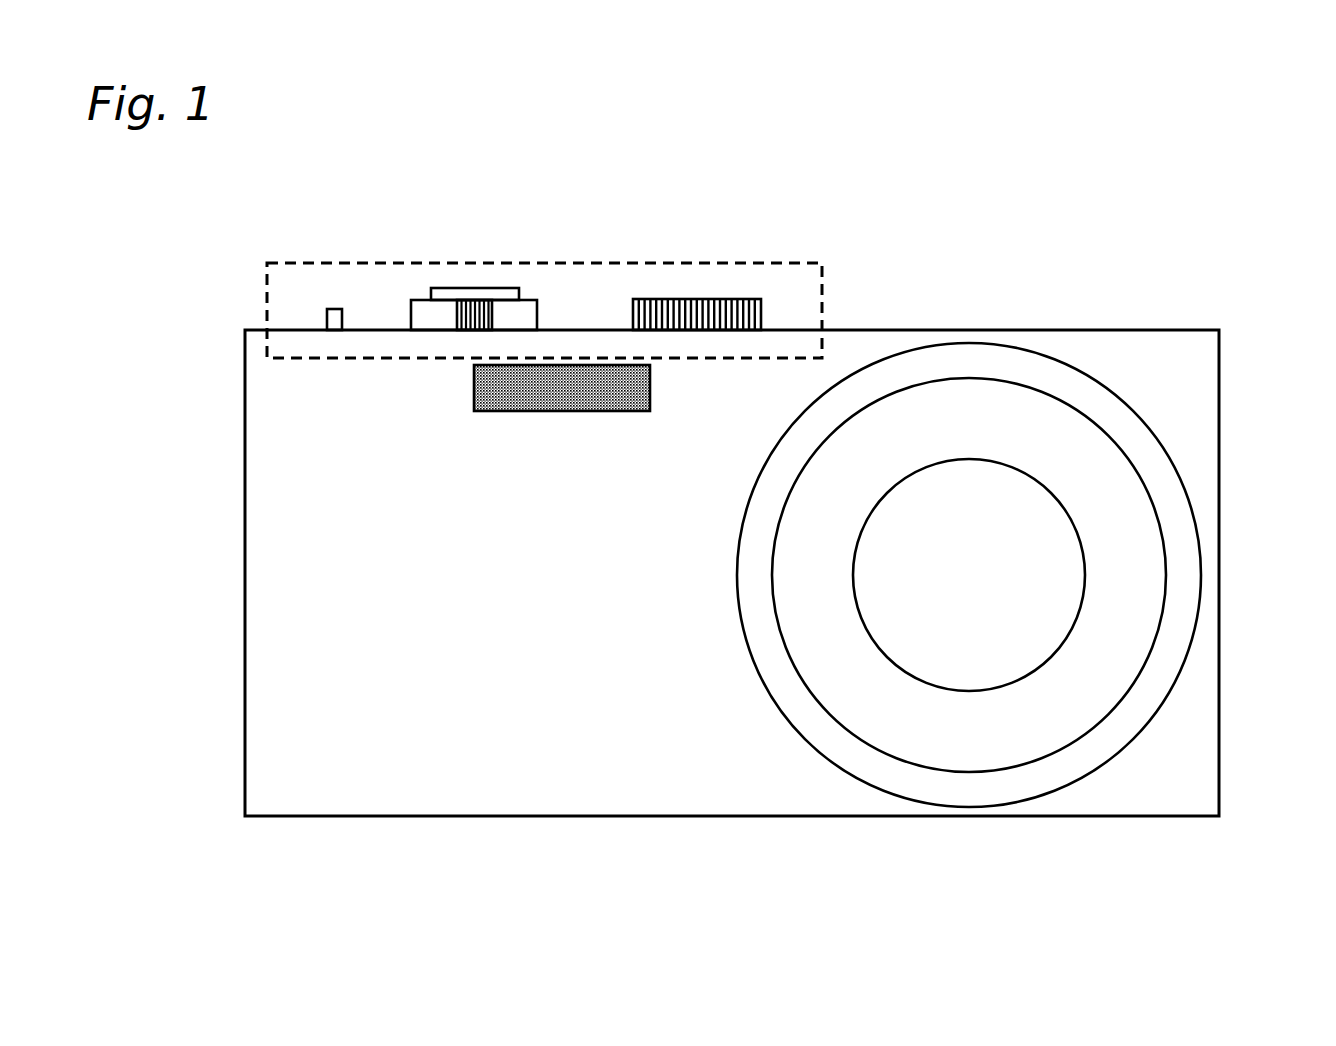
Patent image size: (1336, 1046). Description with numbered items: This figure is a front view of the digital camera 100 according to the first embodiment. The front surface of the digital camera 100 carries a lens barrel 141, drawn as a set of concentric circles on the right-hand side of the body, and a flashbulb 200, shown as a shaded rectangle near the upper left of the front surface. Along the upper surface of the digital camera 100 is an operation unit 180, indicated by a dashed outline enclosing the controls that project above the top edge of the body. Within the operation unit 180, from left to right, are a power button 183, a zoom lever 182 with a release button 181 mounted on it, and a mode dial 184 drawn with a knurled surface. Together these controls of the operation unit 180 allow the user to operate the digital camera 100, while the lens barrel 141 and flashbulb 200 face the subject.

The digital camera 100 is at (1090, 254).
The lens barrel 141 is at (1139, 580).
The operation unit 180 is at (712, 262).
The release button 181 is at (470, 293).
The zoom lever 182 is at (435, 315).
The power button 183 is at (330, 318).
The mode dial 184 is at (662, 303).
The flashbulb 200 is at (510, 397).